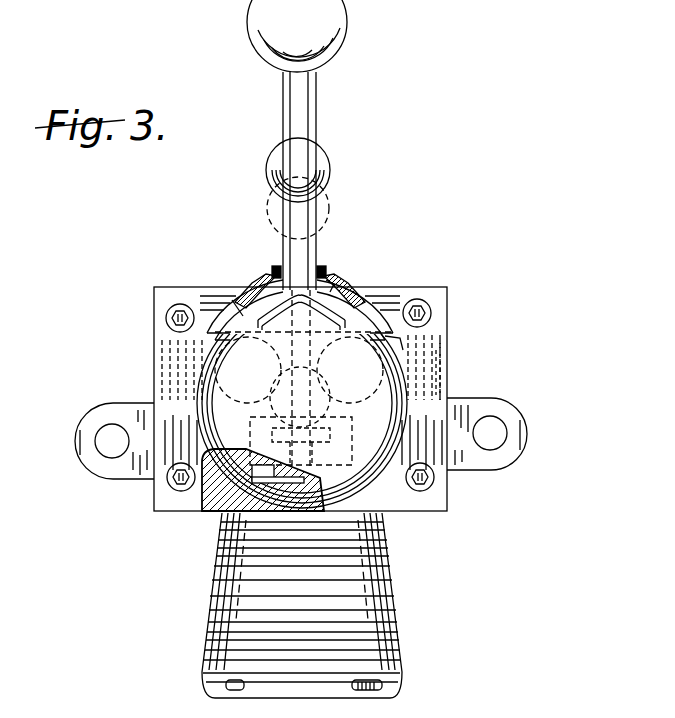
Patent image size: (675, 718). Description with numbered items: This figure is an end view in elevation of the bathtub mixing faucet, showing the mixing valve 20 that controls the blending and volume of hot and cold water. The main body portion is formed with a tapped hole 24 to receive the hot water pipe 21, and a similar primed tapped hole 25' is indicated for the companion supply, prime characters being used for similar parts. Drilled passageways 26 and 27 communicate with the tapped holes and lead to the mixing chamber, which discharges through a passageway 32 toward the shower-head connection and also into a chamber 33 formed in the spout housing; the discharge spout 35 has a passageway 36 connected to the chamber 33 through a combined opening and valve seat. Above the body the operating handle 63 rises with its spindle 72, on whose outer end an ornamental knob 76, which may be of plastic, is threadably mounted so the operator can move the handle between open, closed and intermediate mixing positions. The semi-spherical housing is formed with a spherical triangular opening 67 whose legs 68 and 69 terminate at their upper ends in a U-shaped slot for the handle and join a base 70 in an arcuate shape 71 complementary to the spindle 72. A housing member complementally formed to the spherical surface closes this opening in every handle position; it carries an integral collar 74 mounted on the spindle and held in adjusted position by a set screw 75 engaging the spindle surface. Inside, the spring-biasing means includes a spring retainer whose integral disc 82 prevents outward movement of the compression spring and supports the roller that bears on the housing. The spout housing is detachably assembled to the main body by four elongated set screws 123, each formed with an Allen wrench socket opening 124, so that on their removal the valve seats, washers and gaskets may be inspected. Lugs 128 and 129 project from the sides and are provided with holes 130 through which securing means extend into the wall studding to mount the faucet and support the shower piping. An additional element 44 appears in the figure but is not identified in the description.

The mixing valve 20 is at (362, 284).
The hot water pipe 21 is at (392, 305).
The tapped hole 24 is at (154, 346).
The housing wall 25' is at (464, 347).
The drilled passageway 26 is at (248, 370).
The drilled passageway 27 is at (350, 370).
The passageway 32 is at (327, 443).
The chamber 33 is at (240, 446).
The discharge spout 35 is at (394, 596).
The passageway 36 is at (358, 688).
The knob 44 is at (330, 198).
The operating handle 63 is at (322, 110).
The spherical triangular opening 67 is at (244, 302).
The leg 68 is at (266, 282).
The leg 69 is at (348, 292).
The base 70 is at (335, 326).
The arcuate shape 71 is at (255, 322).
The spindle 72 is at (305, 128).
The collar 74 is at (318, 268).
The set screw 75 is at (330, 284).
The ornamental knob 76 is at (336, 28).
The disc 82 is at (346, 420).
The elongated set screw 123 is at (172, 306).
The Allen wrench socket opening 124 is at (183, 310).
The lug 128 is at (494, 398).
The lug 129 is at (96, 410).
The hole 130 is at (96, 446).